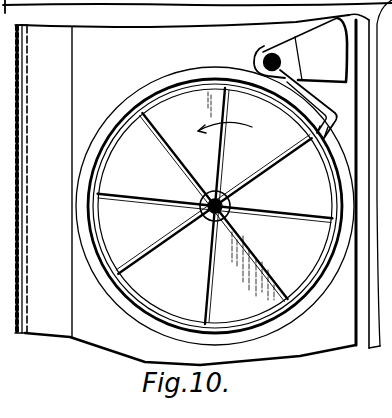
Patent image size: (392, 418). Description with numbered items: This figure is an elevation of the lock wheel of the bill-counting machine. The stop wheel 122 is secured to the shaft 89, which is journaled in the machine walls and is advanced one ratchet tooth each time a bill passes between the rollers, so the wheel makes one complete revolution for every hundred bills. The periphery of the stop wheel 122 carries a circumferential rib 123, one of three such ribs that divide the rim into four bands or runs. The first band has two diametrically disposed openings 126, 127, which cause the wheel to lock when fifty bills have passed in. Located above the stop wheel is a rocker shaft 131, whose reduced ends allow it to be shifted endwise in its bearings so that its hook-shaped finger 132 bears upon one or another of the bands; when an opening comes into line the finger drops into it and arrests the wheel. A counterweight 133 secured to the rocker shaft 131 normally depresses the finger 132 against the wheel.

The shaft 89 is at (232, 203).
The stop wheel 122 is at (159, 92).
The circumferential rib 123 is at (118, 106).
The opening 126 is at (322, 141).
The opening 127 is at (110, 266).
The rocker shaft 131 is at (263, 56).
The hook-shaped finger 132 is at (322, 100).
The counterweight 133 is at (305, 50).